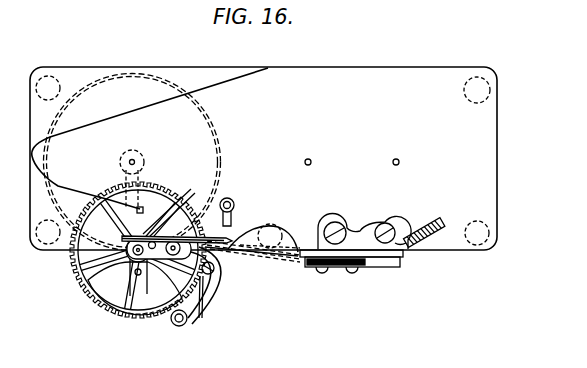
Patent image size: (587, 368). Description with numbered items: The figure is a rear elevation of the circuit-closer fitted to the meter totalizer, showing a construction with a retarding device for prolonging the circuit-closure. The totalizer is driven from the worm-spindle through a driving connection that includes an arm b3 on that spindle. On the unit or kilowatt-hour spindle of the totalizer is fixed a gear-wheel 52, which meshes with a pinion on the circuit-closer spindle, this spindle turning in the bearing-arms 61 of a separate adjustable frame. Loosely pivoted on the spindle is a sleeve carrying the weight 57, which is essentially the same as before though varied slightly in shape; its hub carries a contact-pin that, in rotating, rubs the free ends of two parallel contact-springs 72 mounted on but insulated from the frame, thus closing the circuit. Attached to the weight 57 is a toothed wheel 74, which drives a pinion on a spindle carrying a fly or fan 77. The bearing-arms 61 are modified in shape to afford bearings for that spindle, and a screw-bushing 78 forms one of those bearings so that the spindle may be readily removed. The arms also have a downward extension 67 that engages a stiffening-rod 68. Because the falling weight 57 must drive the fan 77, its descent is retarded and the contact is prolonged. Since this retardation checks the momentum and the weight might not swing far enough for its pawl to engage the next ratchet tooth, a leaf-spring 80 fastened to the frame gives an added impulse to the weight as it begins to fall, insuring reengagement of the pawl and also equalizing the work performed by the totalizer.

The gear-wheel 52 is at (219, 141).
The toothed wheel 74 is at (79, 281).
The leaf-spring 80 is at (188, 202).
The weight 57 is at (135, 287).
The screw-bushing 78 is at (222, 262).
The bearing-arms 61 is at (214, 273).
The fly or fan 77 is at (203, 304).
The downward extension 67 is at (194, 321).
The stiffening-rod 68 is at (178, 327).
The arm b3 is at (238, 211).
The contact-springs 72 is at (297, 246).